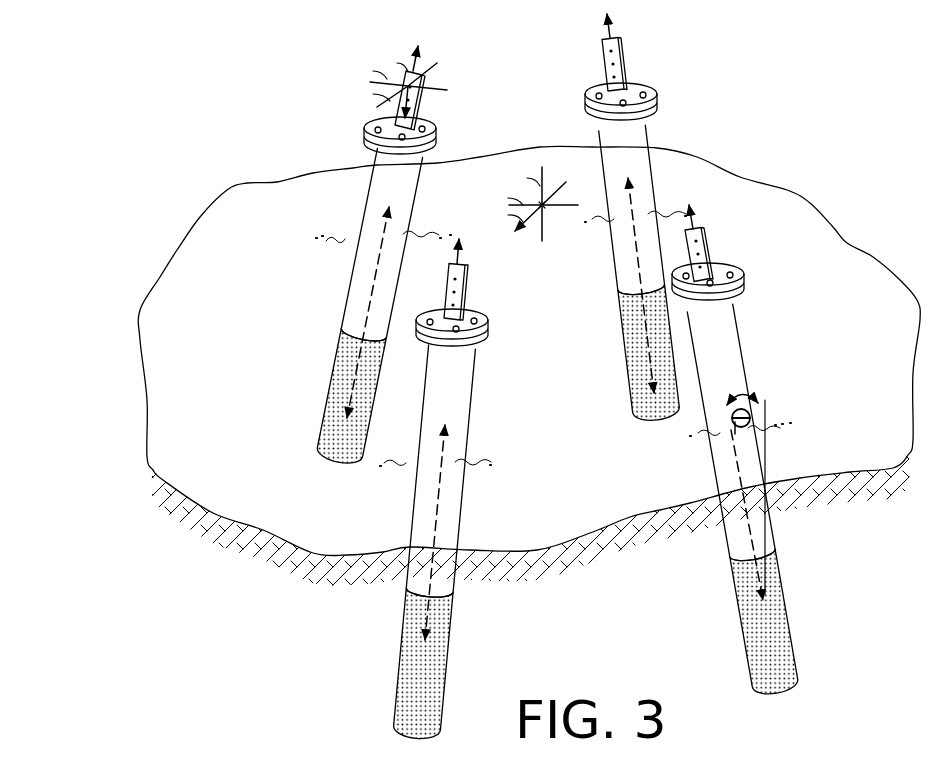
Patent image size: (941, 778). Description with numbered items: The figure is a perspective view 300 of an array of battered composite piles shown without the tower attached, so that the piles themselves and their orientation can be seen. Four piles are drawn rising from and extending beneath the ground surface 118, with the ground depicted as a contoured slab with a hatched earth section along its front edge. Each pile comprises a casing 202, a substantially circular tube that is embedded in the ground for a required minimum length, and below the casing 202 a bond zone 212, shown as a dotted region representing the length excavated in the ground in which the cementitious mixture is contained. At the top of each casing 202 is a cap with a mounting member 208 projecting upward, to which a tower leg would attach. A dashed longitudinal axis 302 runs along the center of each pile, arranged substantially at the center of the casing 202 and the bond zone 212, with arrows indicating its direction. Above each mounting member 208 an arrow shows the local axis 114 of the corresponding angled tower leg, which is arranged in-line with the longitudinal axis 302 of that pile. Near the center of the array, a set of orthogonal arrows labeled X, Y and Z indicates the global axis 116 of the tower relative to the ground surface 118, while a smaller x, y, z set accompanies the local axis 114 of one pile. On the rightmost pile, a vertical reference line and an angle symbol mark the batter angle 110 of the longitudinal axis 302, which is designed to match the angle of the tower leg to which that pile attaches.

The perspective view 300 is at (93, 65).
The ground surface 118 is at (160, 278).
The casing 202 is at (367, 185).
The bond zone 212 is at (330, 393).
The longitudinal axis 302 is at (376, 265).
The mounting member 208 is at (414, 106).
The local axis 114 is at (374, 56).
The global axis 116 is at (525, 165).
The batter angle 110 is at (748, 398).